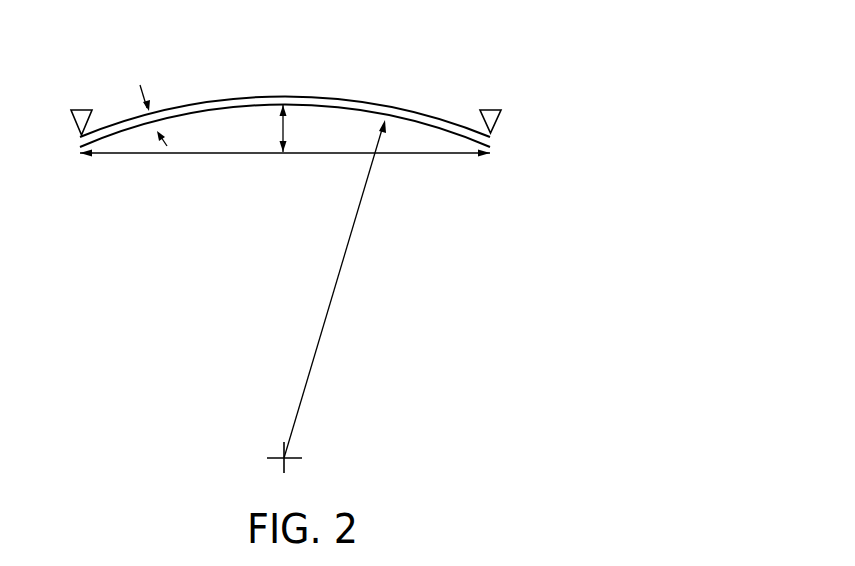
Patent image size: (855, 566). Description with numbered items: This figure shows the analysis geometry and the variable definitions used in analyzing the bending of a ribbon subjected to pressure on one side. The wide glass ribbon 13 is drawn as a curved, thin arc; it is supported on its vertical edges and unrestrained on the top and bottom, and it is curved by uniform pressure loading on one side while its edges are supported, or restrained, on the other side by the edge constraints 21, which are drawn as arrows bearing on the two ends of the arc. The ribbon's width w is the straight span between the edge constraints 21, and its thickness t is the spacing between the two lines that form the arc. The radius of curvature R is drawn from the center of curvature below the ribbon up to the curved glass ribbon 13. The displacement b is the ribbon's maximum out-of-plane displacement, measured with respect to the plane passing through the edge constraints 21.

The glass ribbon 13 is at (330, 99).
The edge constraints 21 is at (82, 109).
The ribbon width w is at (285, 166).
The maximum out-of-plane displacement b is at (291, 128).
The ribbon thickness t is at (153, 107).
The radius of curvature R is at (326, 296).